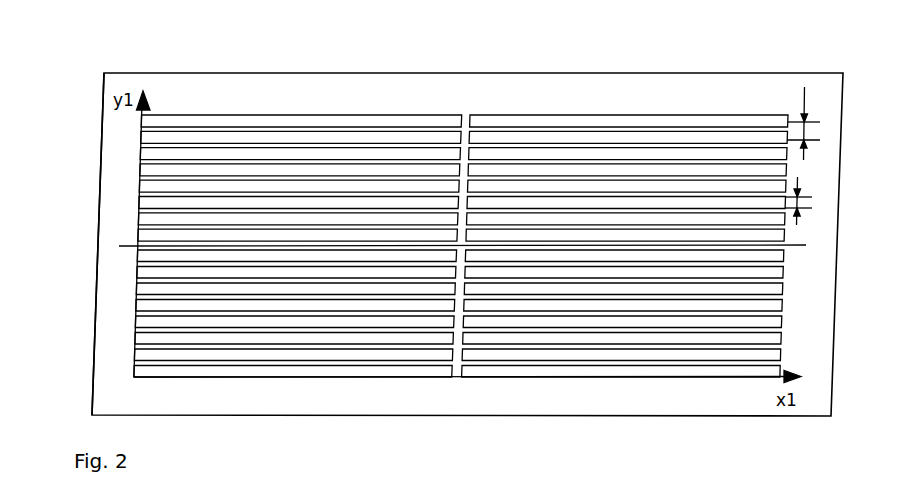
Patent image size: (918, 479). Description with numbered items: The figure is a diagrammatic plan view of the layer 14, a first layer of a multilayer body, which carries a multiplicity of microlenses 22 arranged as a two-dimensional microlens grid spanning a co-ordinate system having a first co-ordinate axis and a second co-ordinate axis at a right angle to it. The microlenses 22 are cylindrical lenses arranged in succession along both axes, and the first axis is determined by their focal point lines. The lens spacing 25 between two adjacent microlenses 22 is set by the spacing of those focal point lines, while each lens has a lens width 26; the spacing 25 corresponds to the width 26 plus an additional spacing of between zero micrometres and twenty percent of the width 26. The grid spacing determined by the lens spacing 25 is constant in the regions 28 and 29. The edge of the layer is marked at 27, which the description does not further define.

The layer 14 is at (99, 220).
The edge of substrate 27 is at (118, 162).
The microlenses 22 is at (448, 203).
The region 28 is at (450, 178).
The region 29 is at (446, 313).
The lens spacing 25 is at (809, 123).
The lens width 26 is at (808, 198).